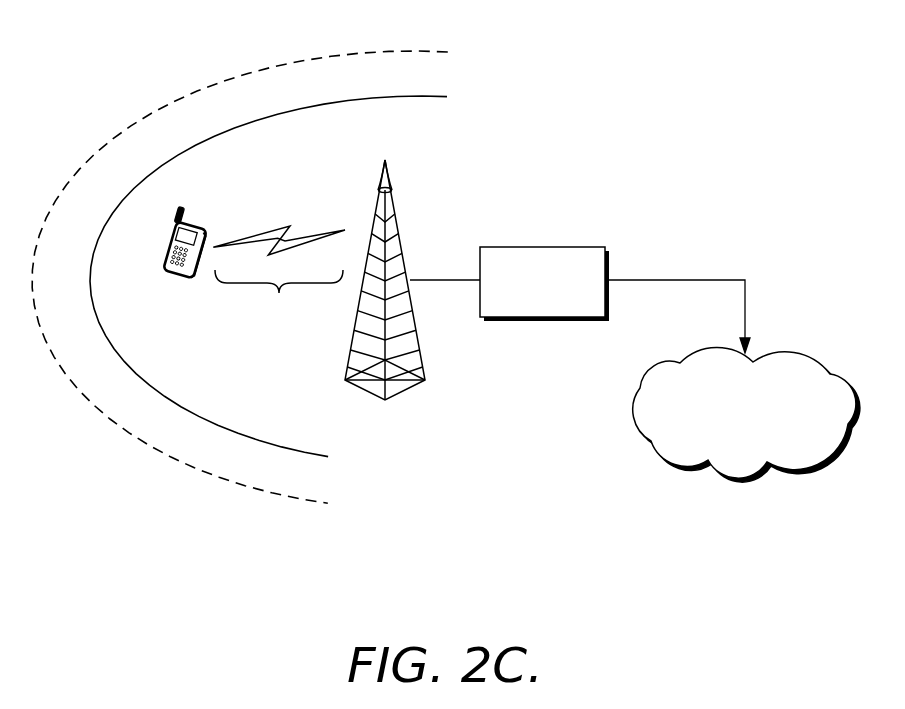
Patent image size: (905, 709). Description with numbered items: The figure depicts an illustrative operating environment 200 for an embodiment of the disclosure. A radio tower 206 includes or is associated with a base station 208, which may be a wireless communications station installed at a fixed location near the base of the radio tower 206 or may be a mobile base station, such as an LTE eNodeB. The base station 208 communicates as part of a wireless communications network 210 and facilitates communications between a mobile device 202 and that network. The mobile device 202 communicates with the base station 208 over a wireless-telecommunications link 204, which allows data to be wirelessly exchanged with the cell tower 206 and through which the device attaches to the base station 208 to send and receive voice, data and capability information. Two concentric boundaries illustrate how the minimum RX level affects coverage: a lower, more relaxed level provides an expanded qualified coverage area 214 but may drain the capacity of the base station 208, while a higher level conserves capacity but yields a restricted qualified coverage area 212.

The wireless communication system 200 is at (175, 62).
The mobile device 202 is at (192, 222).
The wireless-telecommunications link 204 is at (279, 293).
The radio tower 206 is at (425, 380).
The base station 208 is at (540, 247).
The wireless communications network 210 is at (793, 350).
The restricted qualified coverage area 212 is at (357, 98).
The expanded qualified coverage area 214 is at (287, 63).